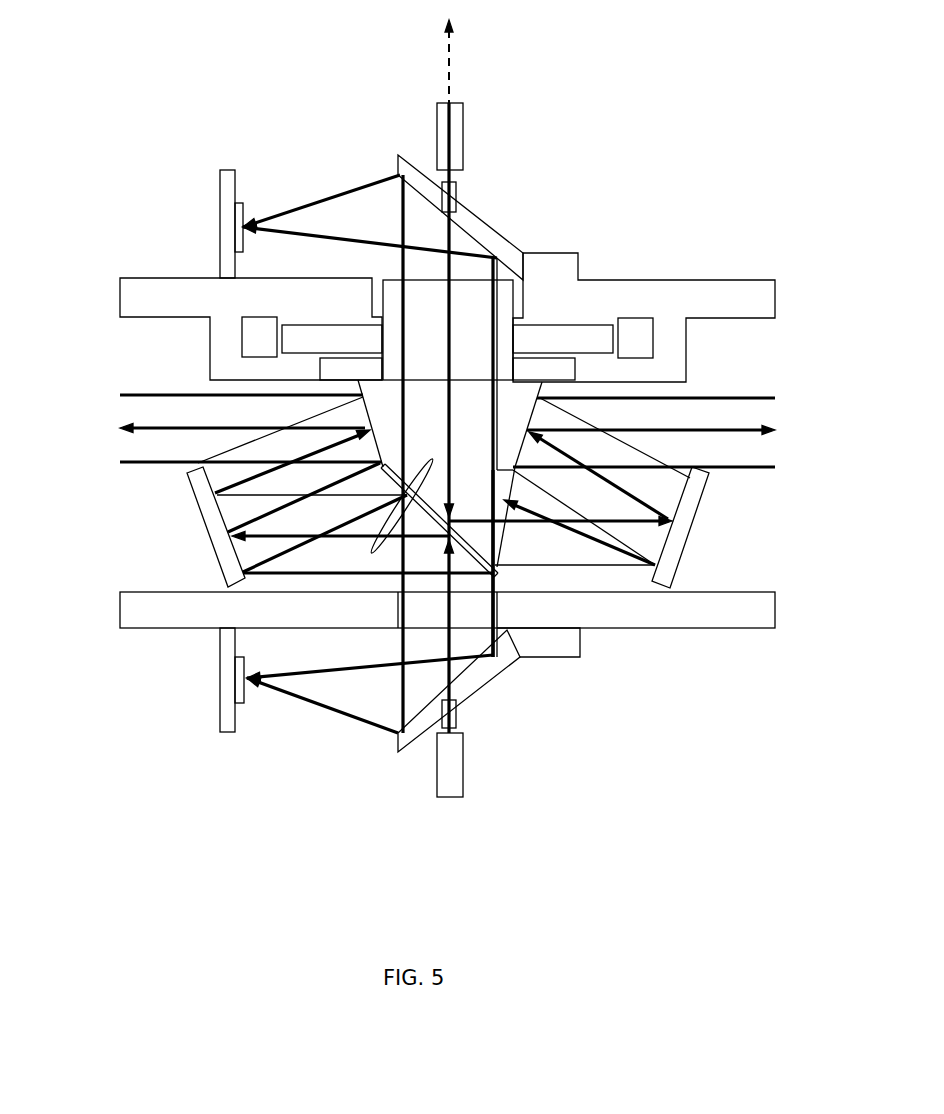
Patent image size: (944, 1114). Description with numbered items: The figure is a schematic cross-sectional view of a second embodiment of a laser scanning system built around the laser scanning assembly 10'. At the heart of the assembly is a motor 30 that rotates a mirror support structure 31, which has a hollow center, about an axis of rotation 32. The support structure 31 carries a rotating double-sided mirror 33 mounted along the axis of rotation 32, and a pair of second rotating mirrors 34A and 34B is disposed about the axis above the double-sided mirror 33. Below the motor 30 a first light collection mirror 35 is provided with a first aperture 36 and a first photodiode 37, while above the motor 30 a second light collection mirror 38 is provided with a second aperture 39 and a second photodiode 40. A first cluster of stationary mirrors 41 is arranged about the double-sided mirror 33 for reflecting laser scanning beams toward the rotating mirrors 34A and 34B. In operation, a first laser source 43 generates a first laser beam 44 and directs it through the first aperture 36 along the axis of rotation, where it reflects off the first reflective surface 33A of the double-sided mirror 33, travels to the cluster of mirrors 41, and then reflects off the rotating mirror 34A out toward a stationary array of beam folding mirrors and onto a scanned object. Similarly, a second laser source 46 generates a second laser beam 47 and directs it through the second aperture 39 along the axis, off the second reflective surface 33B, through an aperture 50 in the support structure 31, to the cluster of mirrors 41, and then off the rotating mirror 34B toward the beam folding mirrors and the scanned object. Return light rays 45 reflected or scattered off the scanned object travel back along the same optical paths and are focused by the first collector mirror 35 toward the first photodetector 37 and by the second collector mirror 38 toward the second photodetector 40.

The laser scanning assembly 10' is at (447, 741).
The motor 30 is at (210, 348).
The mirror support structure 31 is at (390, 278).
The axis of rotation 32 is at (452, 57).
The rotating double-sided mirror 33 is at (495, 565).
The first reflective surface 33A is at (407, 540).
The second reflective surface 33B is at (407, 497).
The second rotating mirror 34A is at (370, 418).
The second rotating mirror 34B is at (535, 412).
The first light collection mirror 35 is at (487, 697).
The first aperture 36 is at (453, 732).
The first photodiode 37 is at (245, 695).
The second light collection mirror 38 is at (500, 222).
The second aperture 39 is at (452, 185).
The second photodiode 40 is at (243, 210).
The first cluster of stationary mirrors 41 is at (195, 522).
The first laser source 43 is at (462, 770).
The first laser beam 44 is at (452, 678).
The return light rays 45 is at (112, 408).
The second laser source 46 is at (463, 118).
The second laser beam 47 is at (450, 297).
The aperture 50 is at (518, 503).